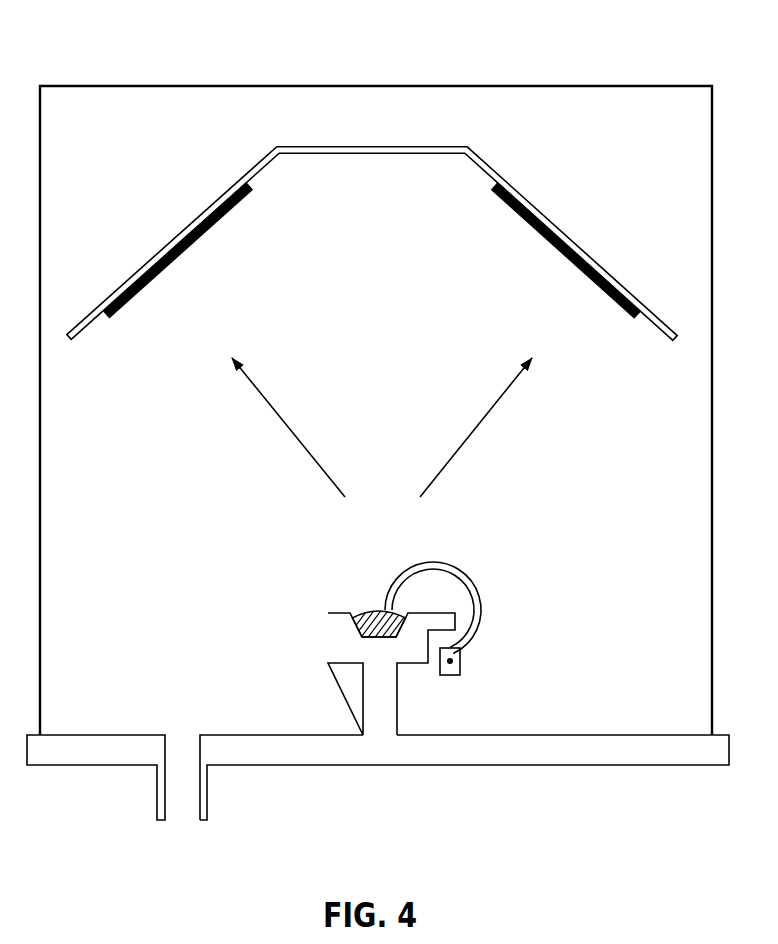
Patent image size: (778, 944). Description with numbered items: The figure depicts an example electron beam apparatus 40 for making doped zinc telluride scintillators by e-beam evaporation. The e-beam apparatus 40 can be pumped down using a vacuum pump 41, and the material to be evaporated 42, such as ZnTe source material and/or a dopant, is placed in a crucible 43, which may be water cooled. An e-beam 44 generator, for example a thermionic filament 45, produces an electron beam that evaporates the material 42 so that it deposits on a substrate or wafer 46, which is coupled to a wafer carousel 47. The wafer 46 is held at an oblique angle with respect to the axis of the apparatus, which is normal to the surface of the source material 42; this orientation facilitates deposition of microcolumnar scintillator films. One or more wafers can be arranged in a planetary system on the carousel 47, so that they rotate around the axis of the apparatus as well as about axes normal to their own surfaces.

The electron beam apparatus 40 is at (520, 68).
The vacuum pump 41 is at (182, 770).
The material to be evaporated 42 is at (363, 615).
The crucible 43 is at (343, 640).
The e-beam 44 is at (453, 563).
The thermionic filament 45 is at (448, 680).
The substrate 46 is at (188, 252).
The wafer carousel 47 is at (450, 150).